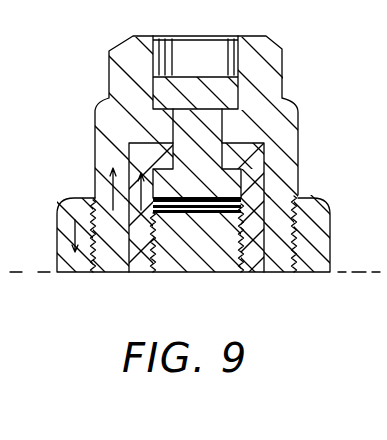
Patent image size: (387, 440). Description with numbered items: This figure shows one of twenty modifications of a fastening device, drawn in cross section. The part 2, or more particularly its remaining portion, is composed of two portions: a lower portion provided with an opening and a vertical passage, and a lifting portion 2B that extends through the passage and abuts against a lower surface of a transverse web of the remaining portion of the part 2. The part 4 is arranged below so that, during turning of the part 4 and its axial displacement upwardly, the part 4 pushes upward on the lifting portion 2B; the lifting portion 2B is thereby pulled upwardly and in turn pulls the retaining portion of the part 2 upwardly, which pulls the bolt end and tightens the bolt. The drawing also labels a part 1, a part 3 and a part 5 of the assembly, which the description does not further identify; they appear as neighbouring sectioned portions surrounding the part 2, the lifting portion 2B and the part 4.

The plug element 1 is at (213, 258).
The part 2 is at (172, 182).
The lifting portion 2B is at (127, 156).
The flange ring 3 is at (316, 257).
The part 4 is at (273, 253).
The sealing plug 5 is at (214, 184).